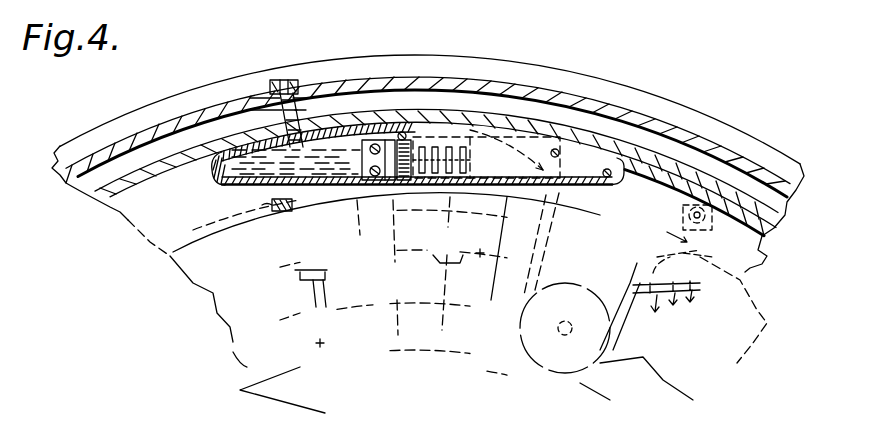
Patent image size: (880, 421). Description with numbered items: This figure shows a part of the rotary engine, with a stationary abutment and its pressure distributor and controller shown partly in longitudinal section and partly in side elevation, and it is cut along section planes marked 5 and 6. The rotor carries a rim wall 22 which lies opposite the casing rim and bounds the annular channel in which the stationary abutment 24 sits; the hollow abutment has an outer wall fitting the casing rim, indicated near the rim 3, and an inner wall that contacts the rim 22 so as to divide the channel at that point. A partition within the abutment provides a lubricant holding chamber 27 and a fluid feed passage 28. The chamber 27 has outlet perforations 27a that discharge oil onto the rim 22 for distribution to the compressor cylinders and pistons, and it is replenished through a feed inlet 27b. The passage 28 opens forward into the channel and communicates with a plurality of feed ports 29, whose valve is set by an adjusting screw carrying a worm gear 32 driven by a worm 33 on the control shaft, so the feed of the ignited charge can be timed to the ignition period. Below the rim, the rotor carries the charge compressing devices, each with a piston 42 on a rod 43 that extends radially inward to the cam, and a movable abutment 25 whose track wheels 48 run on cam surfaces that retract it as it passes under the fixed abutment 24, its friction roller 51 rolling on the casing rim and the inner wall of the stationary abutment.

The rim 3 is at (655, 165).
The rim wall 22 is at (192, 234).
The stationary abutment 24 is at (585, 163).
The movable abutment 25 is at (680, 220).
The lubricant holding chamber 27 is at (222, 187).
The outlet perforations 27a is at (263, 205).
The feed inlet 27b is at (284, 80).
The fluid feed passage 28 is at (533, 152).
The feed ports 29 is at (463, 147).
The worm gear 32 is at (393, 193).
The worm 33 is at (413, 127).
The piston 42 is at (481, 258).
The rods 43 is at (316, 344).
The track wheels 48 is at (530, 352).
The friction roller 51 is at (750, 247).
The section line 5 is at (457, 31).
The wall 6 is at (382, 27).